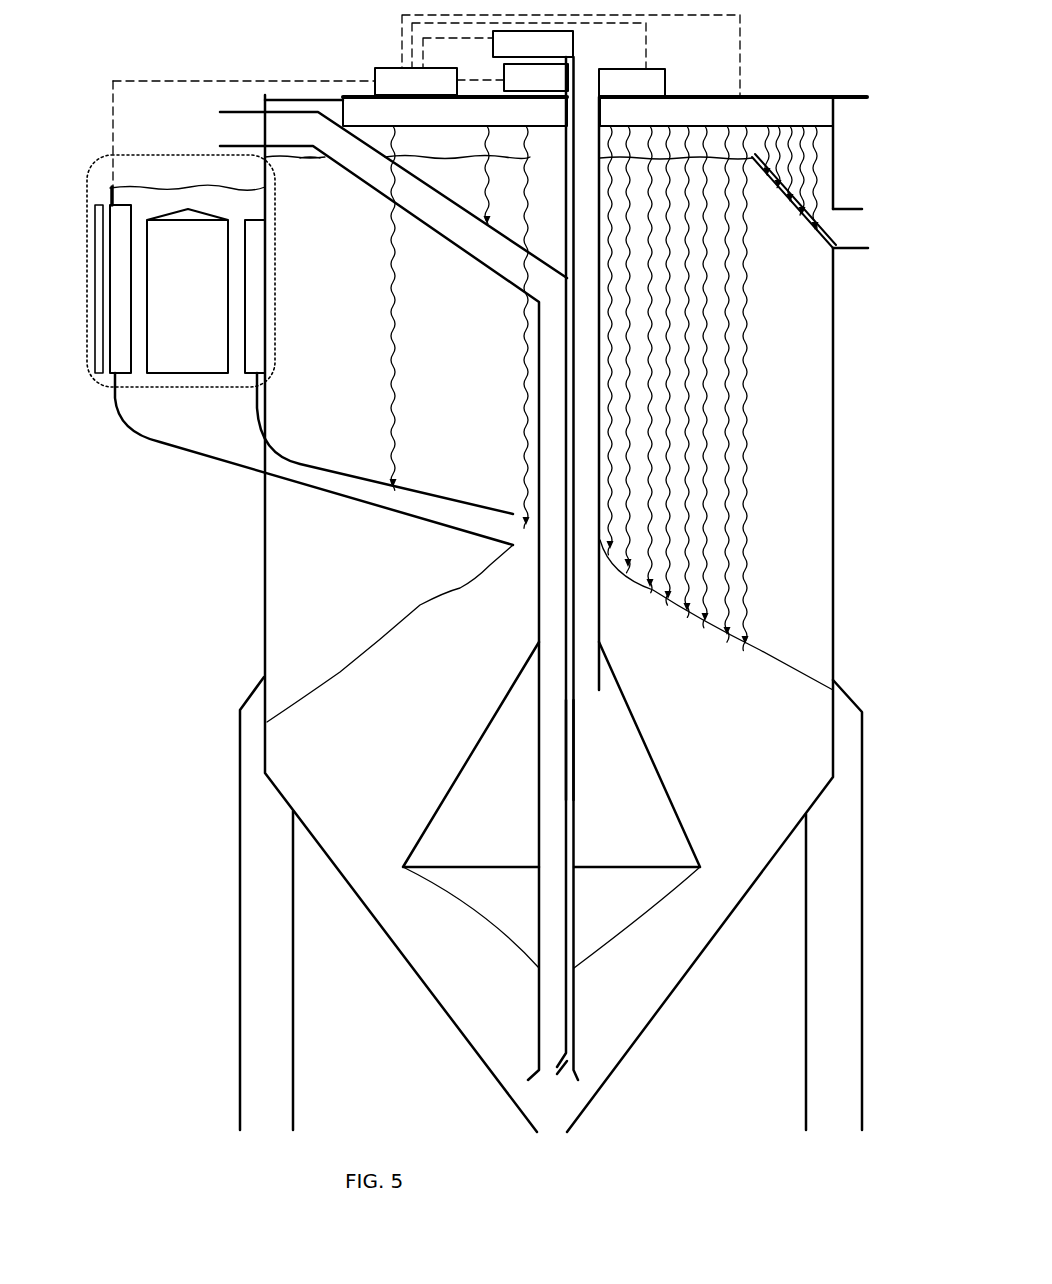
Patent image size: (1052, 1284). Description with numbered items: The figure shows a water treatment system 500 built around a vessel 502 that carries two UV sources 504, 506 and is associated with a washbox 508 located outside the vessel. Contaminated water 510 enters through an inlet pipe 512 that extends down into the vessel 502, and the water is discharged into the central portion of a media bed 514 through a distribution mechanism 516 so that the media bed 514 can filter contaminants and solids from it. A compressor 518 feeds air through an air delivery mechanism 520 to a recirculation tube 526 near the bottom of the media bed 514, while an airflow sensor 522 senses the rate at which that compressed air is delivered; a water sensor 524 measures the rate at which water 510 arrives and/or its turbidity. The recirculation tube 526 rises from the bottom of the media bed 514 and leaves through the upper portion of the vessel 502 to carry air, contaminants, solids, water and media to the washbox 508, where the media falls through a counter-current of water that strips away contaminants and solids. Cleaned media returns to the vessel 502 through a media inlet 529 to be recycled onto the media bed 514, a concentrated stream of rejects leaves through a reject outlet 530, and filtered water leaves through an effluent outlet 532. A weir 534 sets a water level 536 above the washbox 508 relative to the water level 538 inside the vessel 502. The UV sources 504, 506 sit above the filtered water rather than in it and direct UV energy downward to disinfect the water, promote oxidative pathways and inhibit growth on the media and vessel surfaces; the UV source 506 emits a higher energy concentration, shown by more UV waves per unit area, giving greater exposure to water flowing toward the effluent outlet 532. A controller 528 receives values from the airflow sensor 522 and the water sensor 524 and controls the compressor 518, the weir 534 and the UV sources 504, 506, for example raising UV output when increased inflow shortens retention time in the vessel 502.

The water treatment system 500 is at (769, 74).
The vessel 502 is at (677, 96).
The UV source 504 is at (455, 111).
The UV source 506 is at (716, 111).
The washbox 508 is at (186, 156).
The contaminated water 510 is at (585, 82).
The inlet pipe 512 is at (603, 229).
The media bed 514 is at (550, 754).
The distribution mechanism 516 is at (626, 706).
The compressor 518 is at (498, 49).
The air delivery mechanism 520 is at (574, 749).
The airflow sensor 522 is at (512, 77).
The water sensor 524 is at (538, 60).
The recirculation tube 526 is at (423, 184).
The controller 528 is at (426, 56).
The media inlet 529 is at (428, 491).
The reject outlet 530 is at (101, 196).
The effluent outlet 532 is at (814, 201).
The weir 534 is at (110, 186).
The water level 536 is at (190, 187).
The water level 538 is at (644, 158).